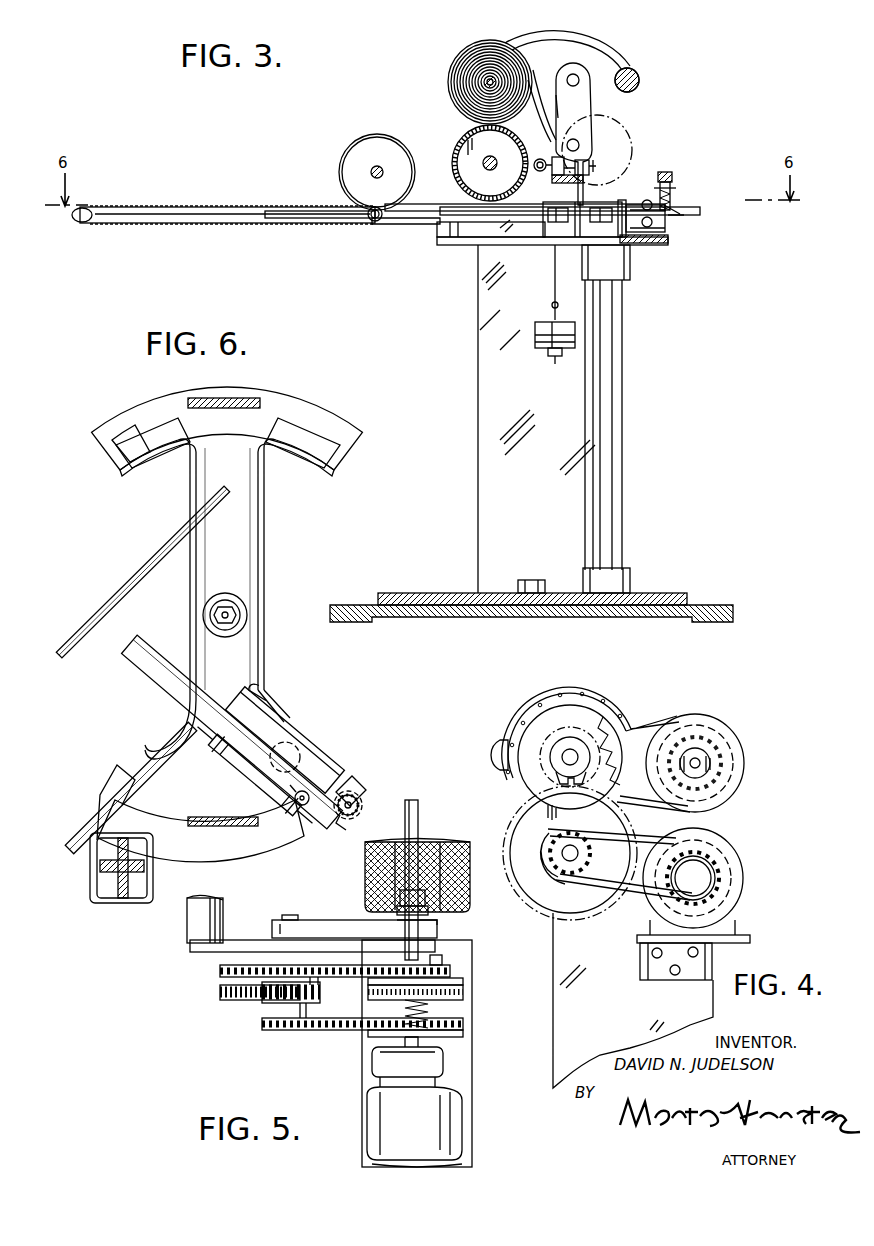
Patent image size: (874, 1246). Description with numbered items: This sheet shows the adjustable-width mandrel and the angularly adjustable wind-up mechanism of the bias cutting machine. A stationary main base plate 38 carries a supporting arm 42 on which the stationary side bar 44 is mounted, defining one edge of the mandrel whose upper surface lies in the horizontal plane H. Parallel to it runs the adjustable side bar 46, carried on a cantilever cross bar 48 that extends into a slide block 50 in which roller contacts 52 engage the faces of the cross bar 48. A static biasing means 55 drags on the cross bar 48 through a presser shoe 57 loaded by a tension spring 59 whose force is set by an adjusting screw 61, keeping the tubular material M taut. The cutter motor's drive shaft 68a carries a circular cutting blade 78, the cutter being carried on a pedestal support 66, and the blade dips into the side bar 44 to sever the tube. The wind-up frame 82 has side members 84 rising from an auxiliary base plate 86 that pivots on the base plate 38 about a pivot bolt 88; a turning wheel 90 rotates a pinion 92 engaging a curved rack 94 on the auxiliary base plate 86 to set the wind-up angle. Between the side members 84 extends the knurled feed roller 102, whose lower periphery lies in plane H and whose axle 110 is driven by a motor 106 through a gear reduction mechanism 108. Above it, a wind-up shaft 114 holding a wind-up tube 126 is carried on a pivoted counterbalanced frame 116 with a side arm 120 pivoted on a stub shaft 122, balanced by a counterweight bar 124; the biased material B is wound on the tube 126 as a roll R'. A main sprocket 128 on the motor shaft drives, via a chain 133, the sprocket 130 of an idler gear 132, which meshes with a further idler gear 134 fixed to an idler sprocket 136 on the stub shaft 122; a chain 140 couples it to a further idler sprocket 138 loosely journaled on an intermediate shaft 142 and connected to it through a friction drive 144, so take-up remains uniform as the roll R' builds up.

In FIG. 3, the biased material B is at (472, 58).
In FIG. 3, the roll R' is at (486, 53).
In FIG. 3, the wind-up shaft 114 is at (493, 76).
In FIG. 5, the wind-up shaft 114 is at (420, 806).
In FIG. 3, the wind-up tube 126 is at (484, 82).
In FIG. 3, the idler sprocket 136 is at (592, 60).
In FIG. 5, the idler sprocket 136 is at (225, 974).
In FIG. 4, the idler sprocket 136 is at (562, 704).
In FIG. 3, the stub shaft 122 is at (574, 74).
In FIG. 5, the stub shaft 122 is at (290, 915).
In FIG. 4, the stub shaft 122 is at (578, 756).
In FIG. 3, the pivoted and counterbalanced frame 116 is at (620, 72).
In FIG. 3, the counterweight bar 124 is at (640, 78).
In FIG. 5, the counterweight bar 124 is at (192, 925).
In FIG. 3, the side arm 120 is at (613, 88).
In FIG. 5, the side arm 120 is at (230, 950).
In FIG. 4, the side arm 120 is at (492, 740).
In FIG. 3, the feed roller 102 is at (460, 145).
In FIG. 5, the feed roller 102 is at (440, 845).
In FIG. 3, the idler gear 132 is at (614, 145).
In FIG. 5, the idler gear 132 is at (226, 996).
In FIG. 4, the idler gear 132 is at (540, 900).
In FIG. 3, the shaft or axle 110 is at (490, 170).
In FIG. 5, the shaft or axle 110 is at (430, 914).
In FIG. 3, the circular cutting blade 78 is at (352, 160).
In FIG. 3, the drive shaft 68a is at (376, 166).
In FIG. 3, the horizontal plane H is at (436, 204).
In FIG. 3, the adjusting screw 61 is at (664, 172).
In FIG. 3, the static biasing means 55 is at (672, 178).
In FIG. 6, the static biasing means 55 is at (302, 806).
In FIG. 3, the tension spring 59 is at (675, 198).
In FIG. 3, the presser shoe 57 is at (672, 211).
In FIG. 3, the roller contacts 52 is at (620, 204).
In FIG. 3, the cross bar 48 is at (304, 219).
In FIG. 6, the cross bar 48 is at (142, 658).
In FIG. 3, the adjustable side bar 46 is at (118, 226).
In FIG. 6, the adjustable side bar 46 is at (148, 570).
In FIG. 3, the material M is at (192, 226).
In FIG. 3, the stationary side bar 44 is at (400, 226).
In FIG. 6, the stationary side bar 44 is at (72, 838).
In FIG. 3, the supporting arm 42 is at (503, 246).
In FIG. 3, the slide block 50 is at (556, 245).
In FIG. 6, the slide block 50 is at (260, 732).
In FIG. 3, the side members 84 is at (480, 387).
In FIG. 6, the side members 84 is at (252, 398).
In FIG. 5, the side members 84 is at (314, 928).
In FIG. 4, the side members 84 is at (560, 1034).
In FIG. 3, the frame 82 is at (494, 442).
In FIG. 6, the frame 82 is at (251, 551).
In FIG. 3, the auxiliary base plate 86 is at (413, 598).
In FIG. 6, the auxiliary base plate 86 is at (252, 518).
In FIG. 3, the pivot bolt 88 is at (532, 581).
In FIG. 6, the pivot bolt 88 is at (226, 606).
In FIG. 3, the main base plate 38 is at (455, 622).
In FIG. 6, the main base plate 38 is at (355, 430).
In FIG. 6, the curved rack 94 is at (358, 784).
In FIG. 6, the pinion 92 is at (360, 804).
In FIG. 6, the turning wheel 90 is at (346, 822).
In FIG. 6, the pedestal support 66 is at (123, 900).
In FIG. 5, the chain 140 is at (333, 964).
In FIG. 4, the chain 140 is at (650, 716).
In FIG. 5, the intermediate shaft 142 is at (438, 962).
In FIG. 5, the further idler sprocket 138 is at (452, 972).
In FIG. 4, the further idler sprocket 138 is at (700, 735).
In FIG. 5, the friction drive 144 is at (465, 994).
In FIG. 4, the friction drive 144 is at (740, 756).
In FIG. 5, the further idler gear 134 is at (270, 1002).
In FIG. 4, the further idler gear 134 is at (578, 746).
In FIG. 5, the sprocket 130 is at (262, 1026).
In FIG. 4, the sprocket 130 is at (588, 860).
In FIG. 5, the chain 133 is at (340, 1032).
In FIG. 4, the chain 133 is at (628, 910).
In FIG. 5, the main sprocket 128 is at (465, 1026).
In FIG. 4, the main sprocket 128 is at (700, 843).
In FIG. 5, the gear reduction mechanism 108 is at (375, 1060).
In FIG. 5, the motor 106 is at (390, 1123).
In FIG. 4, the motor 106 is at (745, 880).